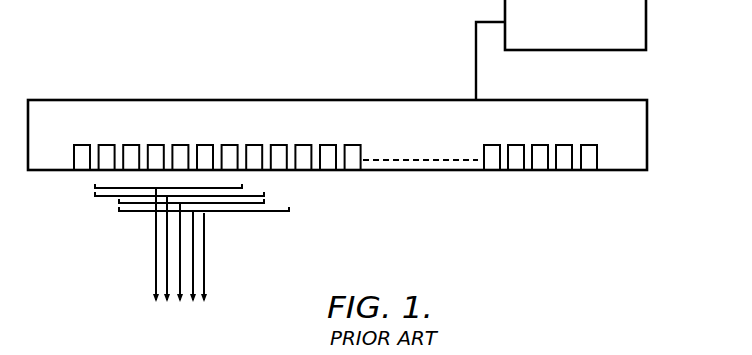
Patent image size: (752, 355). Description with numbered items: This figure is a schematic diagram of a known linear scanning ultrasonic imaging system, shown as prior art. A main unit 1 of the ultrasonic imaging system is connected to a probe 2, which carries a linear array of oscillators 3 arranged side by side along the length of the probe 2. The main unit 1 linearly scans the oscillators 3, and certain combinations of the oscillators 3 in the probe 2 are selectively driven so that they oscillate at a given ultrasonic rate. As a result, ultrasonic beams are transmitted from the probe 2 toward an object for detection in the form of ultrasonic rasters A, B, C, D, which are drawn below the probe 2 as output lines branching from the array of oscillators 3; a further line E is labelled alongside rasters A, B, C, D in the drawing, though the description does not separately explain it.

The main unit 1 is at (646, 24).
The probe 2 is at (681, 89).
The oscillators 3 is at (589, 160).
The ultrasonic raster A is at (156, 302).
The ultrasonic raster B is at (167, 302).
The ultrasonic raster C is at (180, 302).
The ultrasonic raster D is at (193, 302).
The oscillator output line E is at (204, 302).